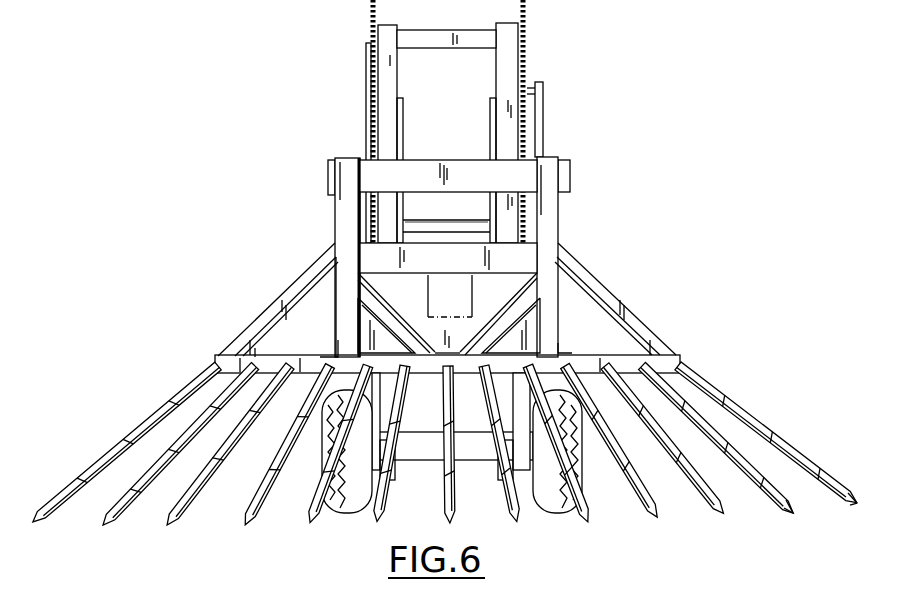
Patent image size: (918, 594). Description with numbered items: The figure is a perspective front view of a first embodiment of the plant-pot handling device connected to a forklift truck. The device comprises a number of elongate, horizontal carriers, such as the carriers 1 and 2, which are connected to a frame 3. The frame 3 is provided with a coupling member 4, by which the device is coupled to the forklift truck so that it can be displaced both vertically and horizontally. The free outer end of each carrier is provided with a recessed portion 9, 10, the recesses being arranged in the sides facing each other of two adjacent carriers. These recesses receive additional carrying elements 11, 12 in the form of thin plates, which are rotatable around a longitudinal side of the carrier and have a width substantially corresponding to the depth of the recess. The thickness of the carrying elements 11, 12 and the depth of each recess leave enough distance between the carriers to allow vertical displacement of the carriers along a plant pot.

The carrier 1 is at (768, 428).
The carrier 2 is at (745, 472).
The frame 3 is at (613, 300).
The coupling member 4 is at (525, 258).
The recessed portion 9 is at (855, 508).
The recessed portion 10 is at (797, 508).
The carrying element 11 is at (838, 498).
The carrying element 12 is at (801, 498).